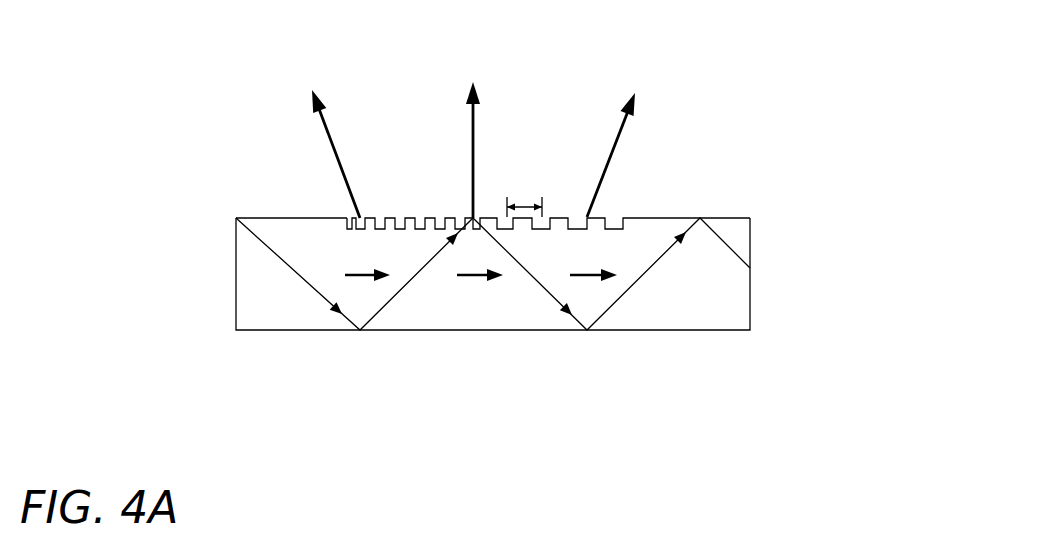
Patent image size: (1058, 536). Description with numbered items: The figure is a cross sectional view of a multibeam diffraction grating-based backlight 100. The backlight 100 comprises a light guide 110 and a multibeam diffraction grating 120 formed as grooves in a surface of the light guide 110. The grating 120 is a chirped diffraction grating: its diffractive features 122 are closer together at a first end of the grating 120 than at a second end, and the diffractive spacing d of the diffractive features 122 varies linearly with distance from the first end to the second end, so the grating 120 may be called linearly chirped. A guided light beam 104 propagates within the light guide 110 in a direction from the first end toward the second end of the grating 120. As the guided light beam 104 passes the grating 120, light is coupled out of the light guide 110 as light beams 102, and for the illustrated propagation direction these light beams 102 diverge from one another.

The multibeam diffraction grating-based backlight 100 is at (768, 60).
The light beams 102 is at (652, 138).
The guided light beam 104 is at (308, 298).
The light guide 110 is at (750, 270).
The multibeam diffraction grating 120 is at (347, 208).
The diffractive features 122 is at (435, 203).
The diffractive spacing d is at (520, 203).